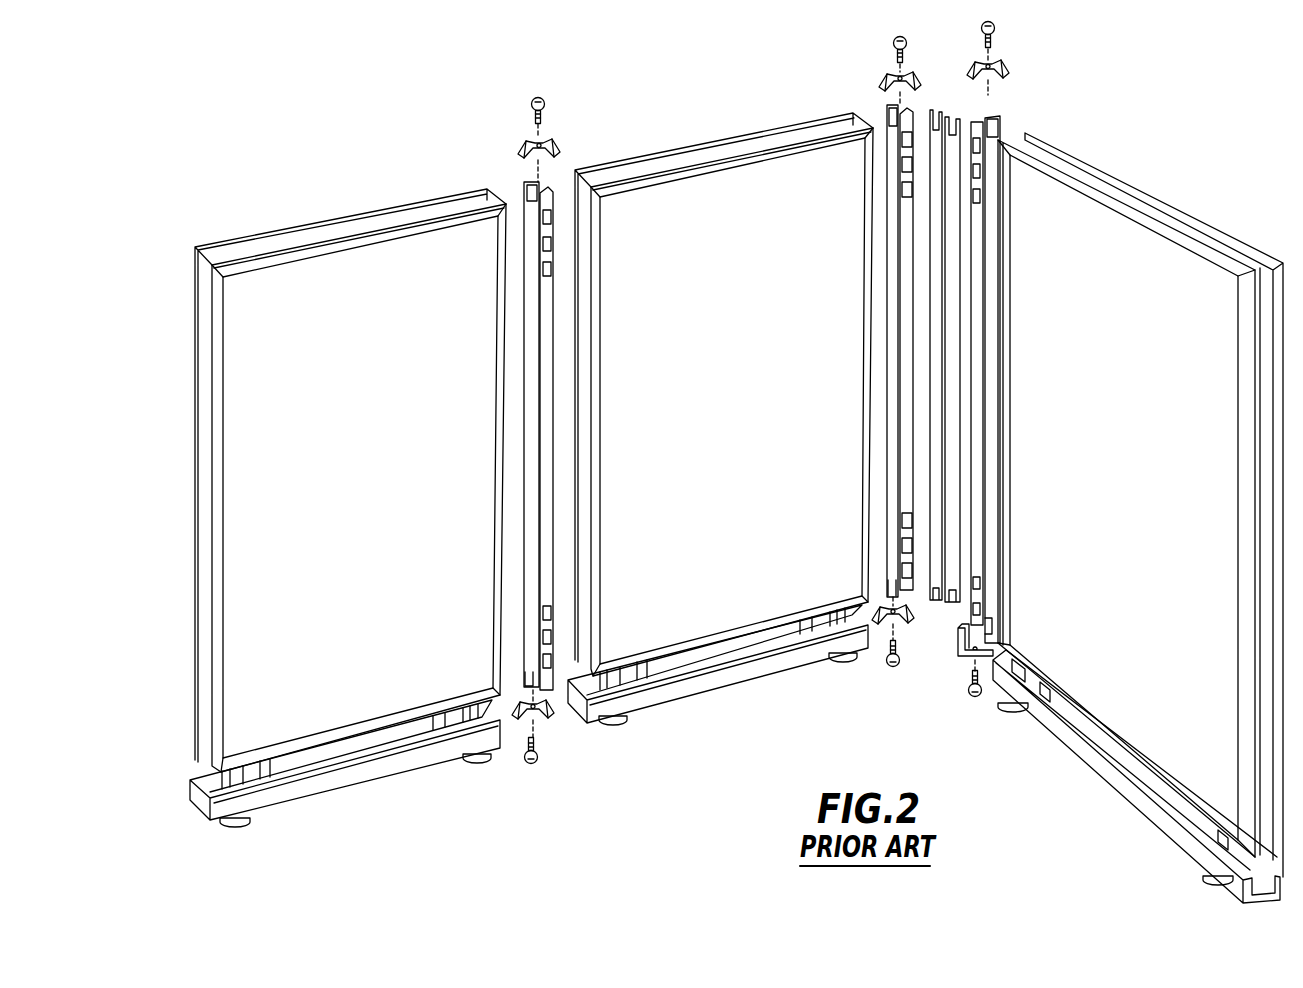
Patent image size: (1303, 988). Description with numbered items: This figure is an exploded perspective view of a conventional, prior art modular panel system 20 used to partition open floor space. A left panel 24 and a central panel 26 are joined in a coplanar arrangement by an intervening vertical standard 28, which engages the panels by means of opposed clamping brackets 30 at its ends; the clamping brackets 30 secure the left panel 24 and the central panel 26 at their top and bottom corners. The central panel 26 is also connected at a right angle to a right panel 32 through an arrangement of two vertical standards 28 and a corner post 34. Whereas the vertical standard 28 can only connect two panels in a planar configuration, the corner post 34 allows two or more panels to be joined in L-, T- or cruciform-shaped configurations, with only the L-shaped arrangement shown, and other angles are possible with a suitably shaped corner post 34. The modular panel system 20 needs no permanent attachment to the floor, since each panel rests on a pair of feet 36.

The modular panel system 20 is at (262, 166).
The left panel 24 is at (372, 500).
The central panel 26 is at (744, 411).
The vertical standard 28 is at (530, 213).
The clamping bracket 30 is at (549, 138).
The right panel 32 is at (1128, 491).
The corner post 34 is at (944, 110).
The feet 36 is at (246, 821).